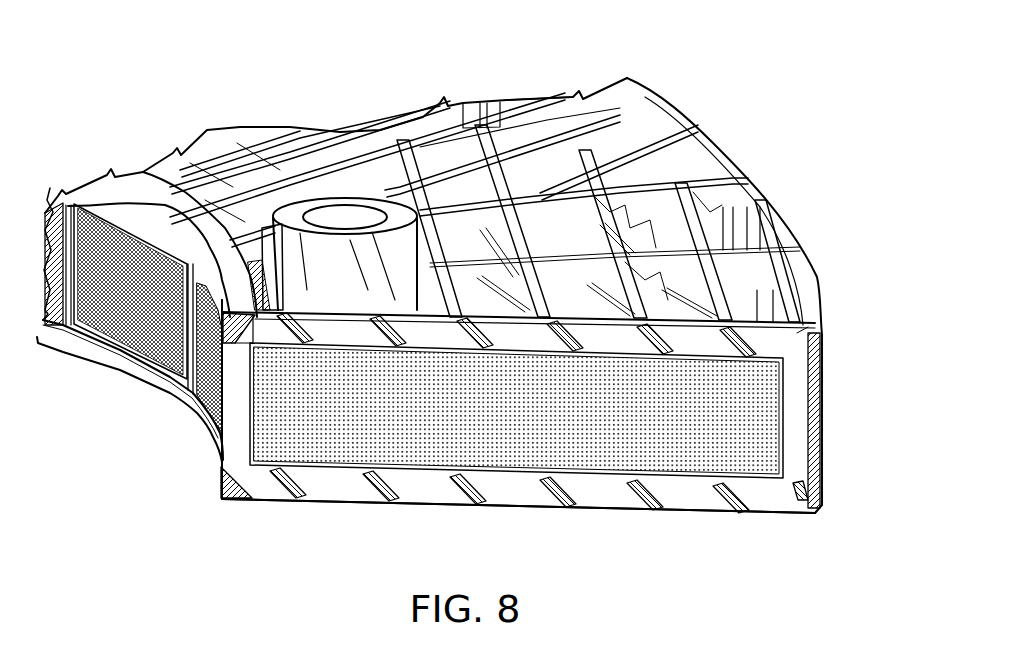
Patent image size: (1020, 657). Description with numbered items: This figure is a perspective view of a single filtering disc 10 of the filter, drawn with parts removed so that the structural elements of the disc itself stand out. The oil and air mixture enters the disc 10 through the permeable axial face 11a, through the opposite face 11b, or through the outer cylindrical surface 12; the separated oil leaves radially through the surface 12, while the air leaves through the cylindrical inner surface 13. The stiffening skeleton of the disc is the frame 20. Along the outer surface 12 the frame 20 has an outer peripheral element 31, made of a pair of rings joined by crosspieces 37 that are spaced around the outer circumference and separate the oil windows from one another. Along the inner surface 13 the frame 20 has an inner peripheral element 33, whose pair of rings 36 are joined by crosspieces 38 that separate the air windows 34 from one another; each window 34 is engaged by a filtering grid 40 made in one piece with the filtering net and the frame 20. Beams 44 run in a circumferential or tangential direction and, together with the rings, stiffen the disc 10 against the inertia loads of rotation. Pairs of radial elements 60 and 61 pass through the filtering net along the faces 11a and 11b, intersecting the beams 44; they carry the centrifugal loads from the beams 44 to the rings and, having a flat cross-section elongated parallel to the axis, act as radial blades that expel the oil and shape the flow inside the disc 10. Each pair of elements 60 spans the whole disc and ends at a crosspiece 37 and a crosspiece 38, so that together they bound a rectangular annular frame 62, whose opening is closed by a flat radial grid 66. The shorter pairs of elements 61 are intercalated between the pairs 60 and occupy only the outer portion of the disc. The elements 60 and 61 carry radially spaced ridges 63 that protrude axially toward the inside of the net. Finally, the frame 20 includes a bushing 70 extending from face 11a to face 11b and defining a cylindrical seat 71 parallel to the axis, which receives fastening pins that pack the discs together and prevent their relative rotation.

The disc 10 is at (688, 78).
The axial face 11a is at (545, 95).
The face 11b is at (625, 520).
The outer cylindrical surface 12 is at (823, 395).
The surface 13 is at (143, 368).
The frame 20 is at (605, 90).
The outer peripheral element 31 is at (820, 520).
The inner peripheral element 33 is at (240, 505).
The window 34 is at (99, 338).
The ring 36 is at (215, 385).
The crosspiece 37 is at (815, 430).
The crosspiece 38 is at (177, 357).
The grid 40 is at (85, 218).
The beam 44 is at (725, 505).
The element 60 is at (633, 200).
The element 61 is at (667, 273).
The rectangular annular frame 62 is at (790, 520).
The ridge 63 is at (643, 150).
The grid 66 is at (355, 435).
The bushing 70 is at (355, 200).
The cylindrical seat 71 is at (340, 210).